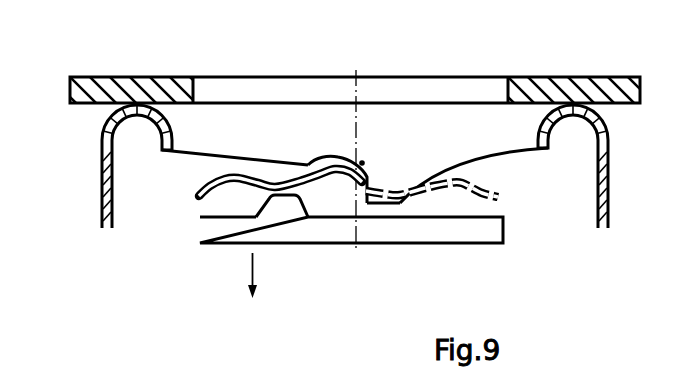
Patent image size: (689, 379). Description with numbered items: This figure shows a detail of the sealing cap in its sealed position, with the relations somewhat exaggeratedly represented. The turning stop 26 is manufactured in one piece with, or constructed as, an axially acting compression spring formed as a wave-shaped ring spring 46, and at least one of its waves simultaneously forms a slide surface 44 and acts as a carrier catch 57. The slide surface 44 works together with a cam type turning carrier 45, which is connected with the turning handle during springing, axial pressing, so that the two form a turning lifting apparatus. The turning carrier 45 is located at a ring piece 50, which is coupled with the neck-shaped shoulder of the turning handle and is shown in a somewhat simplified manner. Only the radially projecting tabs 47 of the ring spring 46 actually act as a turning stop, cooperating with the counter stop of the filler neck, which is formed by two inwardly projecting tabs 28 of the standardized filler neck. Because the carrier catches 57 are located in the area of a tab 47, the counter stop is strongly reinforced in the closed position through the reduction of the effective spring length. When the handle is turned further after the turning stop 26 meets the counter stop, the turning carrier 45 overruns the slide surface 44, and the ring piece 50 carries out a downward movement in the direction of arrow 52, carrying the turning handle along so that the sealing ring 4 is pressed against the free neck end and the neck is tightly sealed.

The sealing ring 4 is at (128, 76).
The turning stop 26 is at (329, 166).
The tabs 28 is at (391, 193).
The slide surface 44 is at (260, 191).
The cam type turning carrier 45 is at (284, 209).
The wave-shaped ring spring 46 is at (509, 199).
The tabs 47 is at (362, 163).
The ring piece 50 is at (212, 229).
The arrow 52 is at (249, 267).
The carrier catch 57 is at (223, 197).